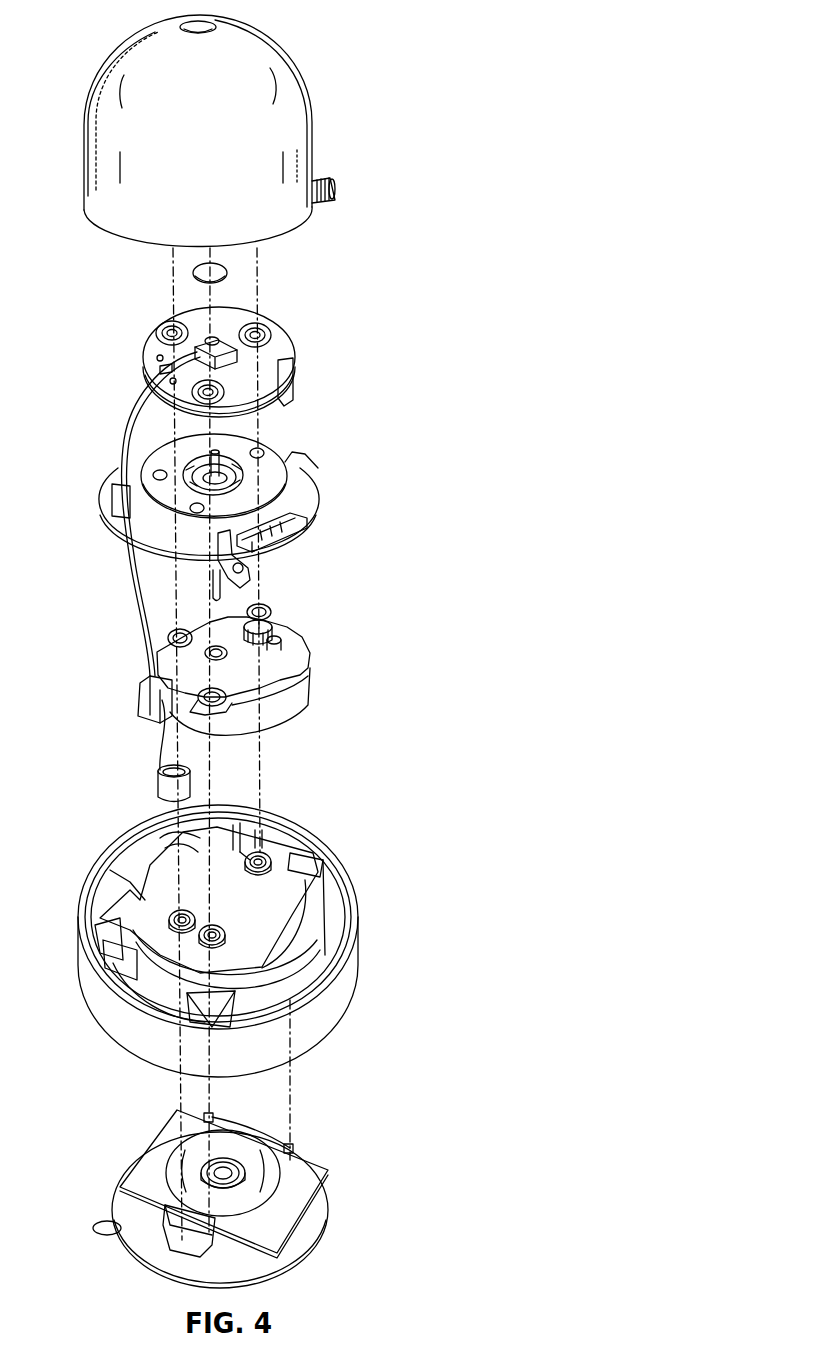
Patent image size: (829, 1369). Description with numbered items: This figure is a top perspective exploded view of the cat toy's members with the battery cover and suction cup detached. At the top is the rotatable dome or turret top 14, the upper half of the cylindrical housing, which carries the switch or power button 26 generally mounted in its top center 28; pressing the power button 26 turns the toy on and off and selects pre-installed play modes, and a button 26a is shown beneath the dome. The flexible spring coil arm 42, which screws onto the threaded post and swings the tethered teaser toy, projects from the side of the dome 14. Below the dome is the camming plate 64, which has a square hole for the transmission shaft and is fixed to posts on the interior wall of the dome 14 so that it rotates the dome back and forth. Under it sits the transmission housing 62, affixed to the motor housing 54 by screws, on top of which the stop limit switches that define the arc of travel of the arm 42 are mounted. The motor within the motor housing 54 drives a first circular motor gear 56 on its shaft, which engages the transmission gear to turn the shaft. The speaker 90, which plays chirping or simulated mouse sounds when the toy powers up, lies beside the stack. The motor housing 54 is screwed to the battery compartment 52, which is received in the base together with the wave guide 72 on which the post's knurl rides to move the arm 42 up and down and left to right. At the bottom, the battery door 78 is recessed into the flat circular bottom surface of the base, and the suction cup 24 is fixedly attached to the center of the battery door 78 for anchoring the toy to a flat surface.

The rotatable dome or turret top 14 is at (290, 94).
The top center of the dome 28 is at (258, 52).
The flexible spring coil arm 42 is at (333, 184).
The switch or power button 26 is at (227, 331).
The button 26a is at (193, 273).
The camming plate 64 is at (277, 518).
The transmission housing 62 is at (300, 490).
The first circular motor gear 56 is at (268, 628).
The motor housing 54 is at (291, 642).
The speaker 90 is at (170, 793).
The battery compartment 52 is at (243, 905).
The wave guide 72 is at (254, 938).
The battery door 78 is at (323, 1173).
The suction cup 24 is at (268, 1197).